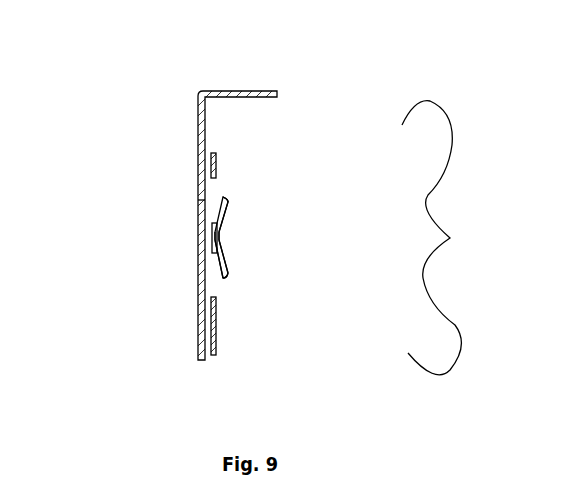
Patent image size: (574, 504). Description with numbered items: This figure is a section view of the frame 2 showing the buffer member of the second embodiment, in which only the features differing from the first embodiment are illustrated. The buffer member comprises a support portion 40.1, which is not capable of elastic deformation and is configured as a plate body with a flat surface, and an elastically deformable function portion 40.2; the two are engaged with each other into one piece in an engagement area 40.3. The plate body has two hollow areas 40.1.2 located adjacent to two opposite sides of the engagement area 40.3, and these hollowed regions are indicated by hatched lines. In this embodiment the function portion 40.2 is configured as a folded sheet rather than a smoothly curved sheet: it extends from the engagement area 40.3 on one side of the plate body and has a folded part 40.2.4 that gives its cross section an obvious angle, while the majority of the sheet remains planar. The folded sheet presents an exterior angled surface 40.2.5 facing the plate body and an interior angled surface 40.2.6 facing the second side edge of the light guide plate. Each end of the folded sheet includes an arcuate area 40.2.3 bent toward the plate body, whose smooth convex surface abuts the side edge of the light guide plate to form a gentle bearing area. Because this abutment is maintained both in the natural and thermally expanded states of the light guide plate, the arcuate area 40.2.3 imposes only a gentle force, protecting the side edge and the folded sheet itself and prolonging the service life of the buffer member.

The frame 2 is at (198, 120).
The support portion 40.1 is at (213, 165).
The hollow areas 40.1.2 is at (212, 201).
The function portion 40.2 is at (369, 238).
The arcuate area 40.2.3 is at (227, 201).
The folded part 40.2.4 is at (218, 238).
The exterior angled surface 40.2.5 is at (220, 213).
The interior angled surface 40.2.6 is at (226, 263).
The engagement area 40.3 is at (218, 236).